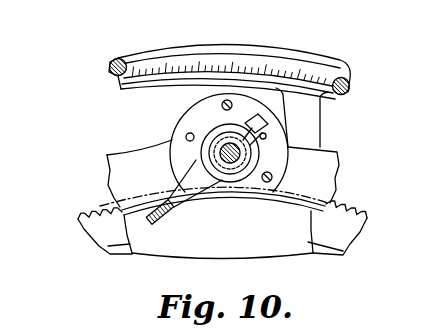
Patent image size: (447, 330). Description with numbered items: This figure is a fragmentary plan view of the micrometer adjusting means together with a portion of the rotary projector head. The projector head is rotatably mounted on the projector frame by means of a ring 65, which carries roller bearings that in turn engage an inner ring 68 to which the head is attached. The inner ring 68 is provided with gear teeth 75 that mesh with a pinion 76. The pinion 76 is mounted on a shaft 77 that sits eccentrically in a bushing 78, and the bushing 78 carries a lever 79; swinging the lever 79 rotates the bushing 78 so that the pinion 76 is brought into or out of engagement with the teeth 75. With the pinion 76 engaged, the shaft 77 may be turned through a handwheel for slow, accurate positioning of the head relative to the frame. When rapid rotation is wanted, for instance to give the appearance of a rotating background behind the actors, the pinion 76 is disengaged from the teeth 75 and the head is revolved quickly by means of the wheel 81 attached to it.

The wheel 81 is at (246, 44).
The bushing 78 is at (195, 113).
The ring 65 is at (122, 154).
The shaft 77 is at (238, 156).
The pinion 76 is at (253, 183).
The lever 79 is at (161, 210).
The gear teeth 75 is at (110, 208).
The inner ring 68 is at (108, 246).